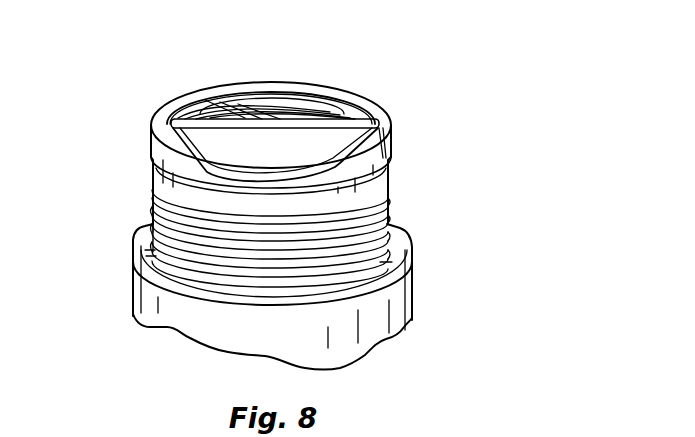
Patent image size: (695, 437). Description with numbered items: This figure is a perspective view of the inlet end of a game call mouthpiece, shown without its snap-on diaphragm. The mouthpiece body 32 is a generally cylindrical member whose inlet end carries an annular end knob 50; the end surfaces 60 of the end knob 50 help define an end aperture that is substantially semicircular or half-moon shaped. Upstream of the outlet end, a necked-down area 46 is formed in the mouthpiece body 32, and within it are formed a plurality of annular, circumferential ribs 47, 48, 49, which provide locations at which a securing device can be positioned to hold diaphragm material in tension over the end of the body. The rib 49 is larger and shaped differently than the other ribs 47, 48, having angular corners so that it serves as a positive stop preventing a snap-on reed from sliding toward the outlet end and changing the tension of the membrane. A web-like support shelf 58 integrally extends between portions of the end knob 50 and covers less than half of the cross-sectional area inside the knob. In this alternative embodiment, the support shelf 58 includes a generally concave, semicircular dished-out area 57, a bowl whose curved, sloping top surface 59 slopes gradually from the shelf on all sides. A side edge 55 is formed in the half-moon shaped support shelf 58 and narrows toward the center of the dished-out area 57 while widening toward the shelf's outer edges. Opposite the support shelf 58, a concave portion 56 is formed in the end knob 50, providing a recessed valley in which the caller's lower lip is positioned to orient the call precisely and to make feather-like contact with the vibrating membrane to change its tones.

The mouthpiece body 32 is at (418, 285).
The necked-down area 46 is at (402, 210).
The annular circumferential rib 47 is at (147, 225).
The annular circumferential rib 48 is at (152, 215).
The annular circumferential rib 49 is at (150, 183).
The end knob 50 is at (152, 160).
The side edge 55 is at (265, 127).
The concave portion 56 is at (275, 178).
The dished-out area 57 is at (332, 96).
The support shelf 58 is at (206, 90).
The sloping top surface 59 is at (265, 125).
The end surface 60 is at (148, 127).